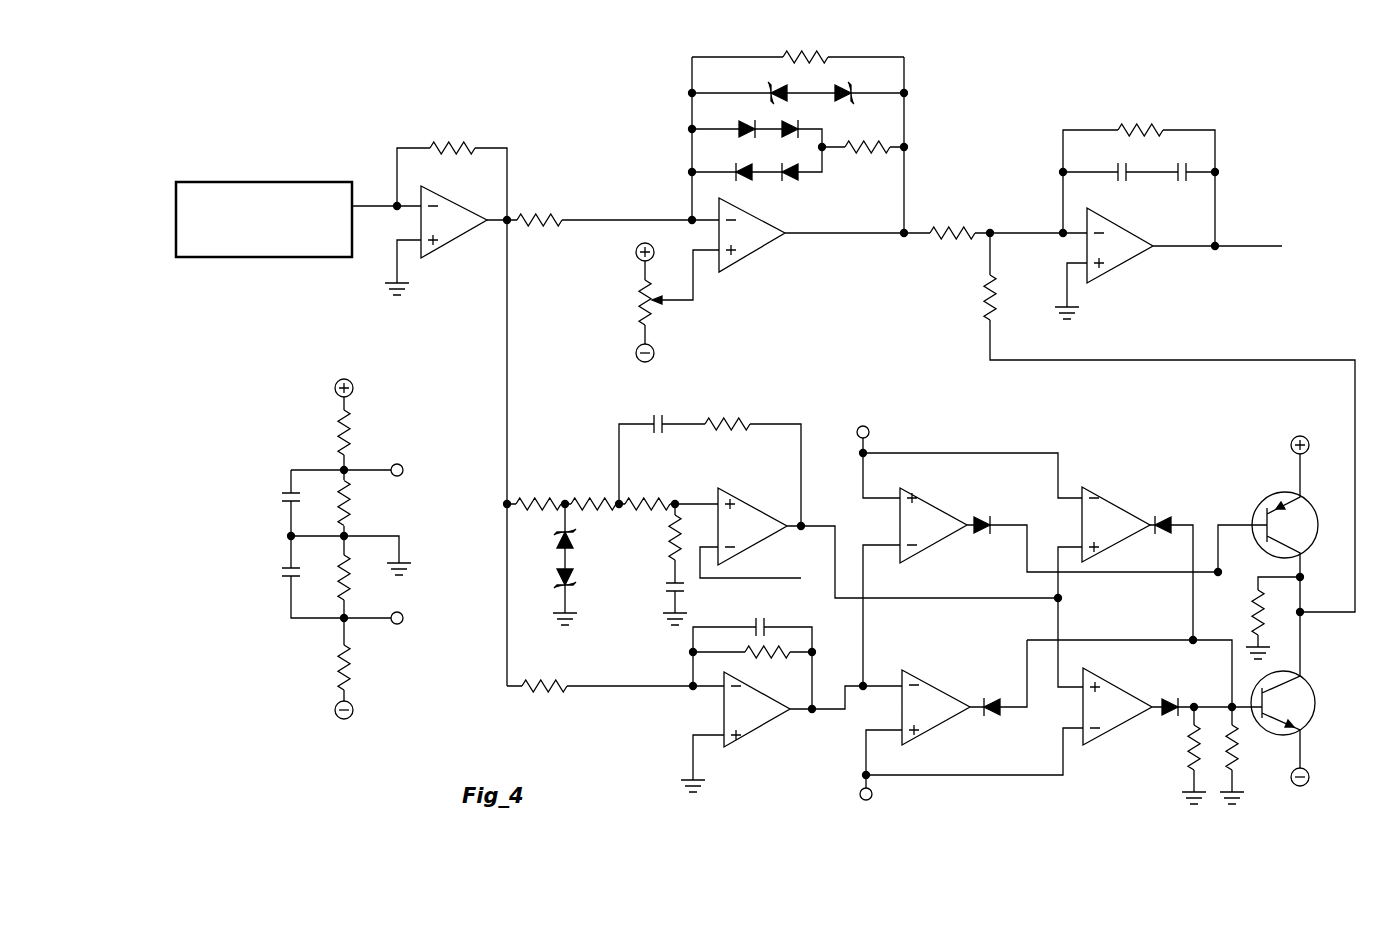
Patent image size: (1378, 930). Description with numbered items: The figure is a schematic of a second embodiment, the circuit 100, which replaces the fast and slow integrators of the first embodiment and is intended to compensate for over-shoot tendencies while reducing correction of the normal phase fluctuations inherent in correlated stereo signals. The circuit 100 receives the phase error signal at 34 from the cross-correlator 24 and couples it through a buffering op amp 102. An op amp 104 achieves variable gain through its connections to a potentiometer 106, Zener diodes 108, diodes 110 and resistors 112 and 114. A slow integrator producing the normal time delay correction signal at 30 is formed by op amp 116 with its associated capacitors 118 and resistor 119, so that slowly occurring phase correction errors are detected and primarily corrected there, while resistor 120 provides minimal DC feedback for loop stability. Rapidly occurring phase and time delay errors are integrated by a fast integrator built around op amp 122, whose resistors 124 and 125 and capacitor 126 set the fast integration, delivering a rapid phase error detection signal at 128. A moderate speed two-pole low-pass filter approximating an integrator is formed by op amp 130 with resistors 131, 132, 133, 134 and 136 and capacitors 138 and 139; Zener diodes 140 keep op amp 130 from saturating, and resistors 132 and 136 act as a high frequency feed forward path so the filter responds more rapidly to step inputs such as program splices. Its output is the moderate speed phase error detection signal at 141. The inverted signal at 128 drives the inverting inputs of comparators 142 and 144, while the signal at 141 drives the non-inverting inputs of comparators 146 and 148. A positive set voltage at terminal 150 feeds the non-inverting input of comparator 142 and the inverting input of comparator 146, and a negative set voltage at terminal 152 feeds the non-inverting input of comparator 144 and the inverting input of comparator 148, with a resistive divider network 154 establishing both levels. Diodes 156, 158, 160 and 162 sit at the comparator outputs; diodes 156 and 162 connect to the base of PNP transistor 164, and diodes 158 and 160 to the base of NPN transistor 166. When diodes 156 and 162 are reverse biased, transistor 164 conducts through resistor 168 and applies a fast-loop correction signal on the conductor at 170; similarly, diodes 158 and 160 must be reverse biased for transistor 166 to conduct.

The cross-correlator 24 is at (252, 258).
The phase error signal 34 is at (372, 202).
The normal time delay correction signal 30 is at (1280, 203).
The circuit 100 is at (1085, 62).
The buffering op amp 102 is at (460, 243).
The op amp 104 is at (760, 247).
The potentiometer 106 is at (640, 300).
The Zener diodes 108 is at (848, 97).
The diodes 110 is at (742, 124).
The resistor 112 is at (882, 142).
The resistor 114 is at (782, 60).
The op amp 116 is at (1117, 268).
The capacitors 118 is at (1178, 174).
The resistor 119 is at (938, 228).
The resistor 120 is at (1146, 128).
The op amp 122 is at (762, 738).
The resistor 124 is at (790, 653).
The resistor 125 is at (553, 690).
The capacitor 126 is at (762, 618).
The rapid phase error detection signal 128 is at (838, 683).
The op amp 130 is at (760, 510).
The resistor 131 is at (546, 500).
The resistor 132 is at (740, 418).
The resistor 133 is at (598, 500).
The resistor 134 is at (656, 500).
The resistor 136 is at (670, 531).
The capacitor 138 is at (660, 414).
The capacitor 139 is at (666, 590).
The Zener diodes 140 is at (558, 545).
The moderate speed phase error detection signal 141 is at (836, 524).
The comparator 142 is at (932, 551).
The comparator 144 is at (967, 655).
The comparator 146 is at (1112, 503).
The comparator 148 is at (1110, 732).
The terminal 150 is at (446, 427).
The terminal 152 is at (401, 617).
The resistive divider network 154 is at (276, 476).
The diode 156 is at (1018, 478).
The diode 158 is at (987, 722).
The diode 160 is at (1198, 480).
The diode 162 is at (1170, 700).
The PNP transistor 164 is at (1283, 492).
The NPN transistor 166 is at (1305, 727).
The resistor 168 is at (1256, 596).
The conductor 170 is at (1248, 334).